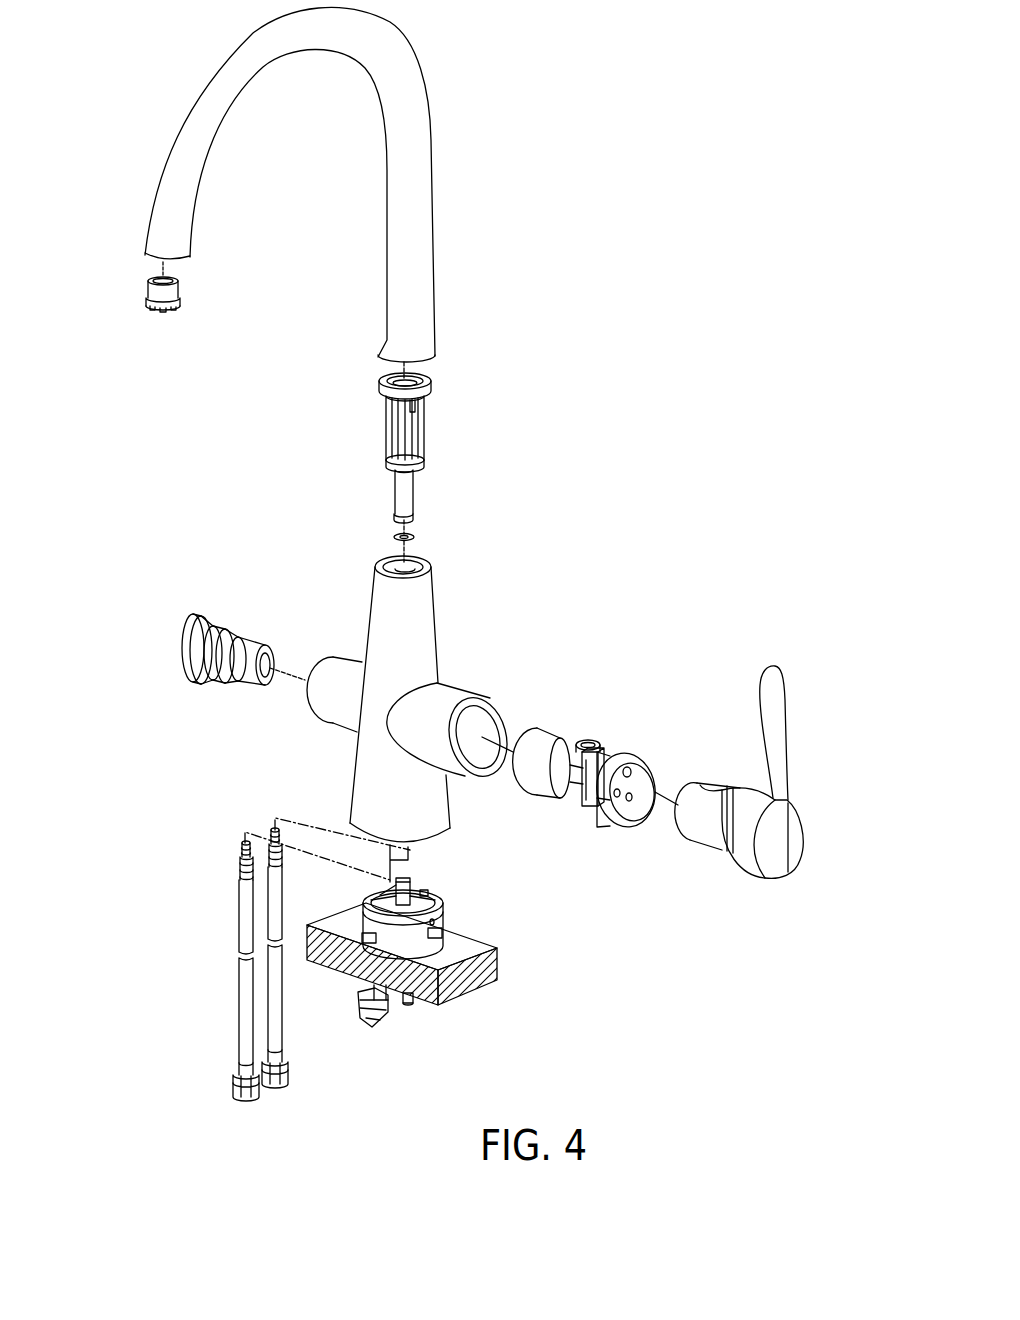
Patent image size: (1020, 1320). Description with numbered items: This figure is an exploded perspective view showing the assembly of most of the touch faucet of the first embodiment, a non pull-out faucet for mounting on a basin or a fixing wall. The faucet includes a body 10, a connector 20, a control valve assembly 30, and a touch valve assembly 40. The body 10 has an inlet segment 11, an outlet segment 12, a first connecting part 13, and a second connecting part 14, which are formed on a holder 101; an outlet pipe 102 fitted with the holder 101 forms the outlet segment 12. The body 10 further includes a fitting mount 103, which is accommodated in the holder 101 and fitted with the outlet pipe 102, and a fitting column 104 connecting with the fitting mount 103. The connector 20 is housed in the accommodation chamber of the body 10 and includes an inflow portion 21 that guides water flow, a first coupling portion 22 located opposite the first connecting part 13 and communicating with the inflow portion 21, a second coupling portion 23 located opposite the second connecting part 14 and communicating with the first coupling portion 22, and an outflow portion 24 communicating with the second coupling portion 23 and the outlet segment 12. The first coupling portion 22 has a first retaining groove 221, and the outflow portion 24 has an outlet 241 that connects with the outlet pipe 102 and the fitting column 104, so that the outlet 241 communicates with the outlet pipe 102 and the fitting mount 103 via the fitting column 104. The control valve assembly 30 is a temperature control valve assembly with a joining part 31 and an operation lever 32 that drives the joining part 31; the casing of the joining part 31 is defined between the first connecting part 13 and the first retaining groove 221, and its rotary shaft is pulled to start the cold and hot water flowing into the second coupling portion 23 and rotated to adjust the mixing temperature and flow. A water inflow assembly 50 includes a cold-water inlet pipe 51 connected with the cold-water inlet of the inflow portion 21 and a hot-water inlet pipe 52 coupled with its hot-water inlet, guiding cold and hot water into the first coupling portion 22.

The body 10 is at (450, 138).
The holder 101 is at (436, 608).
The outlet pipe 102 is at (420, 238).
The fitting mount 103 is at (413, 430).
The fitting column 104 is at (407, 487).
The inlet segment 11 is at (453, 827).
The outlet segment 12 is at (147, 251).
The first connecting part 13 is at (463, 692).
The second connecting part 14 is at (330, 657).
The connector 20 is at (601, 672).
The inflow portion 21 is at (586, 808).
The first coupling portion 22 is at (652, 768).
The first retaining groove 221 is at (632, 808).
The second coupling portion 23 is at (527, 733).
The outflow portion 24 is at (583, 742).
The outlet 241 is at (592, 742).
The control valve assembly 30 is at (815, 802).
The joining part 31 is at (695, 842).
The operation lever 32 is at (787, 697).
The touch valve assembly 40 is at (198, 610).
The water inflow assembly 50 is at (230, 920).
The cold-water inlet pipe 51 is at (238, 1002).
The hot-water inlet pipe 52 is at (282, 1023).